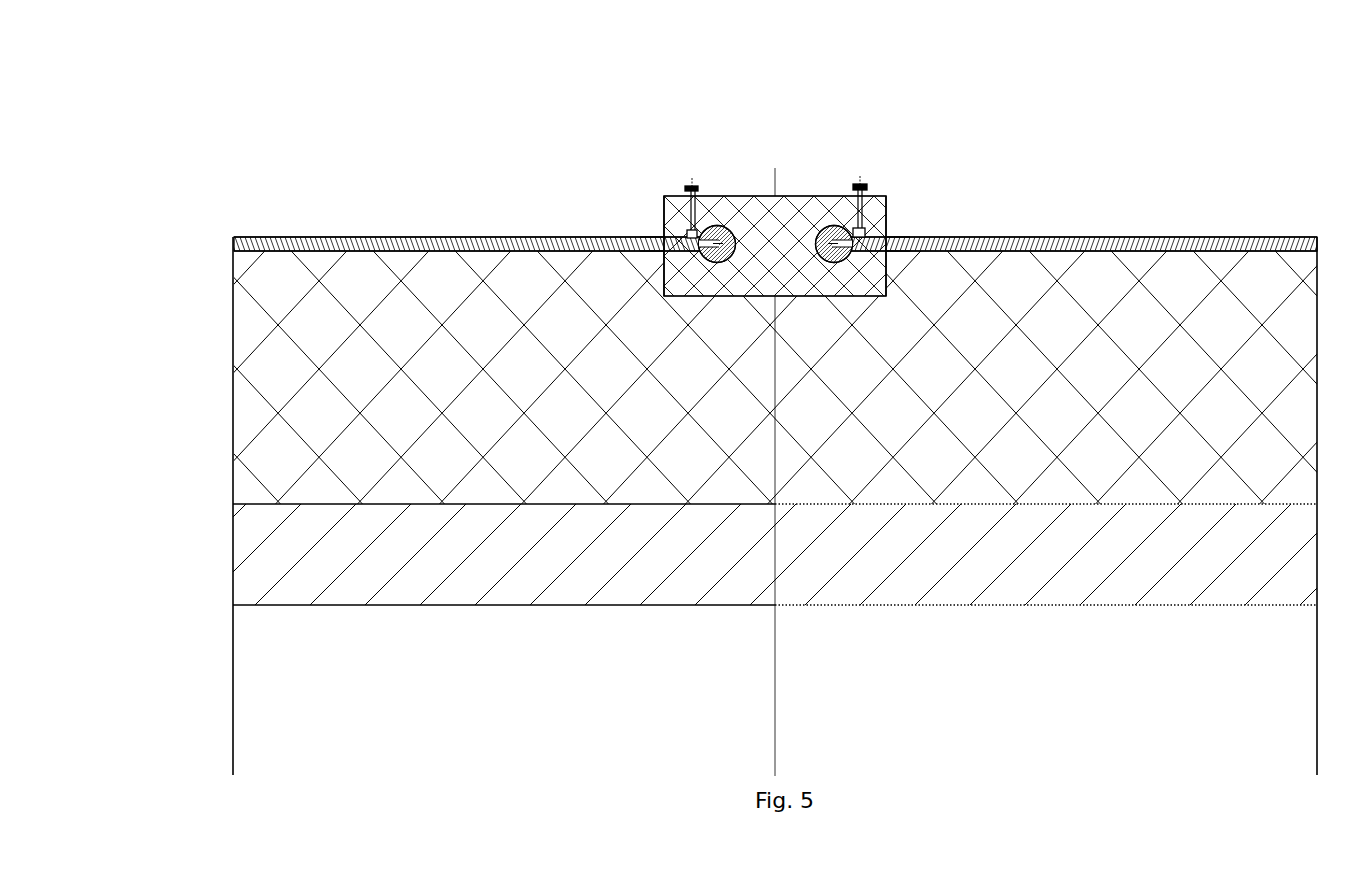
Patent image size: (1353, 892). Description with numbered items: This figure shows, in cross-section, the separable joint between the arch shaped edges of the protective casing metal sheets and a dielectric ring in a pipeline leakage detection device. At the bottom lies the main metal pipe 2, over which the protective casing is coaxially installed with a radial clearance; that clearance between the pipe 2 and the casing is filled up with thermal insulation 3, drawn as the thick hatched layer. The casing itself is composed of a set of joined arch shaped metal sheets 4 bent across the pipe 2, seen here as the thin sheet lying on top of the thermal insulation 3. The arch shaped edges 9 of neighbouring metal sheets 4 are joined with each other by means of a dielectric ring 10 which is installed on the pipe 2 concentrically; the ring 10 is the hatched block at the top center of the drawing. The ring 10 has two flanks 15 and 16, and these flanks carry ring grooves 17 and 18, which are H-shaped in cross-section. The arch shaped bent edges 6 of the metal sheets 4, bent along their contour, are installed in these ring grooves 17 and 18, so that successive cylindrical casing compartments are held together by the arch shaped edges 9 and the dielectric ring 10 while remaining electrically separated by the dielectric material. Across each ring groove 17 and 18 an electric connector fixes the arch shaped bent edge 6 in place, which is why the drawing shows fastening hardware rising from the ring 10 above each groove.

The main metal pipe 2 is at (517, 585).
The thermal insulation 3 is at (243, 412).
The arch shaped metal sheet 4 is at (313, 240).
The arch shaped bent edge 6 is at (715, 260).
The arch shaped edge 9 is at (892, 237).
The dielectric ring 10 is at (736, 197).
The ring flank 15 is at (663, 212).
The ring flank 16 is at (886, 202).
The ring groove 17 is at (650, 236).
The ring groove 18 is at (890, 236).